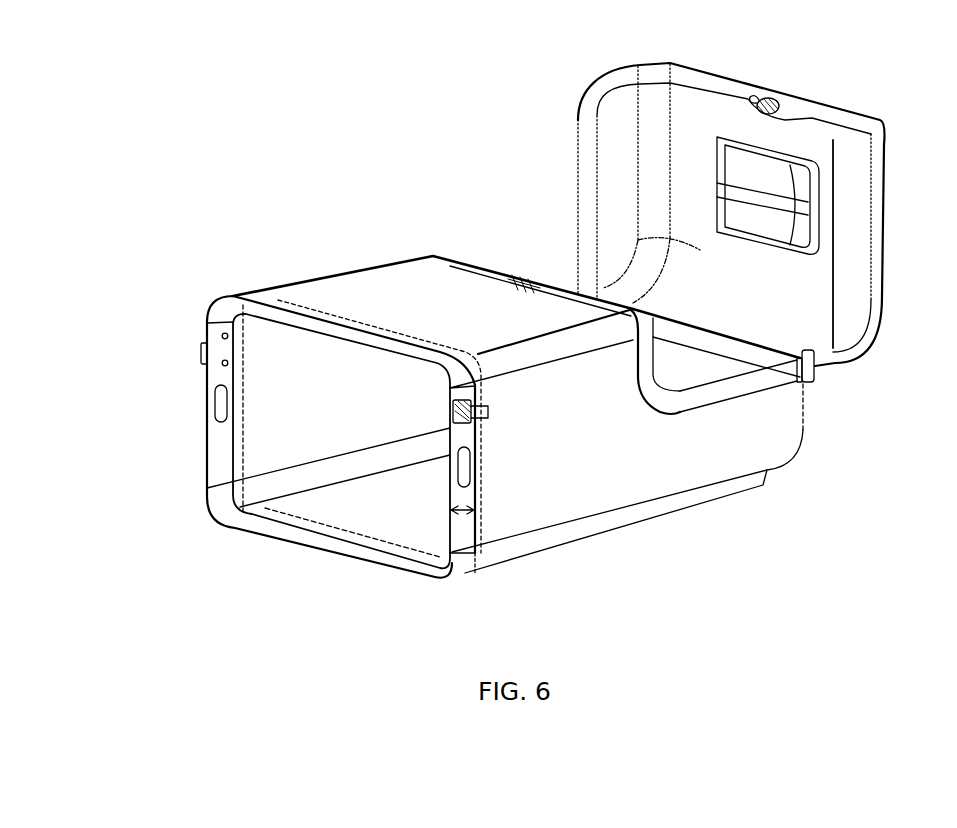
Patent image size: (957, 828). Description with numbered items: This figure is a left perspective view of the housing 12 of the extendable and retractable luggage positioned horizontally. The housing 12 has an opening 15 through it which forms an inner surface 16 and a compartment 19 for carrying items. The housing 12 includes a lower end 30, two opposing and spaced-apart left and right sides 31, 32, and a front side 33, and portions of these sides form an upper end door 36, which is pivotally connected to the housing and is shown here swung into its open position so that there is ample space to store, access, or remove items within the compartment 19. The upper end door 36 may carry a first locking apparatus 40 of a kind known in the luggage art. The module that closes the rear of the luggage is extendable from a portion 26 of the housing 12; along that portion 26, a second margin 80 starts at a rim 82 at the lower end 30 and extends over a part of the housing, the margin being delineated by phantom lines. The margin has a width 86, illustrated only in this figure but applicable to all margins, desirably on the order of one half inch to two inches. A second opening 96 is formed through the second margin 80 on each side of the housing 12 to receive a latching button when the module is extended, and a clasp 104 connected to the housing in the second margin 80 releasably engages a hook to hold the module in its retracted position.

The housing 12 is at (780, 437).
The opening 15 is at (654, 257).
The inner surface 16 is at (378, 518).
The compartment 19 is at (700, 368).
The portion 26 is at (460, 537).
The lower end 30 is at (406, 568).
The left side 31 is at (640, 487).
The right side 32 is at (337, 399).
The front side 33 is at (362, 282).
The upper end door 36 is at (862, 203).
The first locking apparatus 40 is at (771, 98).
The second margin 80 is at (287, 302).
The rim 82 is at (203, 472).
The width 86 is at (482, 502).
The second opening 96 is at (223, 402).
The clasp 104 is at (490, 408).